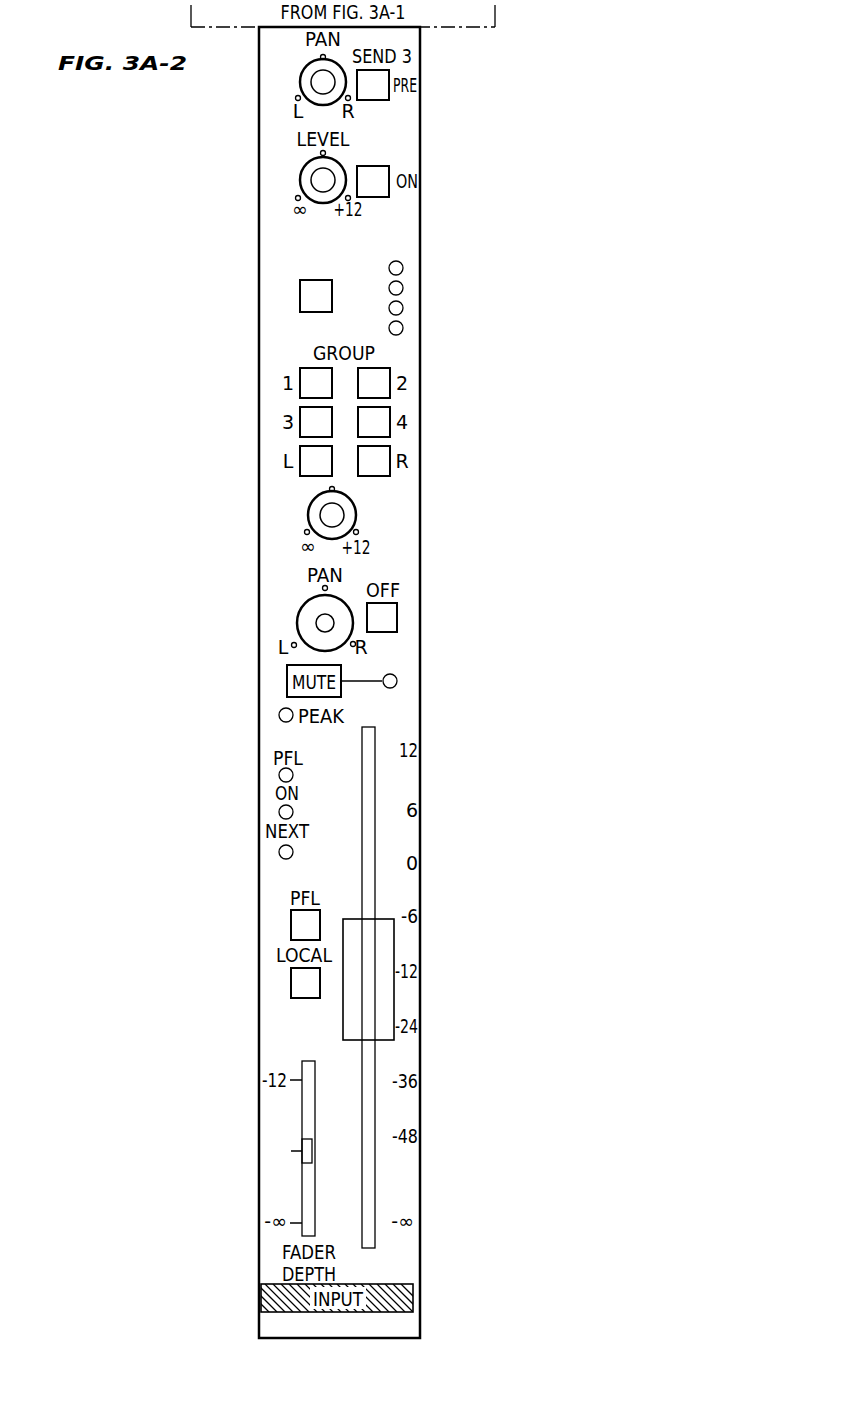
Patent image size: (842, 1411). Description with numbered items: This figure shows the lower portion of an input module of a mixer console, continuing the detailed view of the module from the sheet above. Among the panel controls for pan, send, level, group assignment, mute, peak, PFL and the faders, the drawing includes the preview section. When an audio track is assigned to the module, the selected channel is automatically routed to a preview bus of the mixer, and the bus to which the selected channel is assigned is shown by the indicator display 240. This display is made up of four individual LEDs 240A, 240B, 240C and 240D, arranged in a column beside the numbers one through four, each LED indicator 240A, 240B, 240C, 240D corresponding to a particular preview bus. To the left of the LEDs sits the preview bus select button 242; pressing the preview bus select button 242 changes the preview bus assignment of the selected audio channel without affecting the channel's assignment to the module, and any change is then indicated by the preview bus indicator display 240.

The indicator display 240 is at (399, 242).
The LED indicator 240A is at (403, 270).
The LED indicator 240B is at (403, 290).
The LED indicator 240C is at (403, 310).
The LED indicator 240D is at (403, 330).
The preview bus select button 242 is at (300, 296).